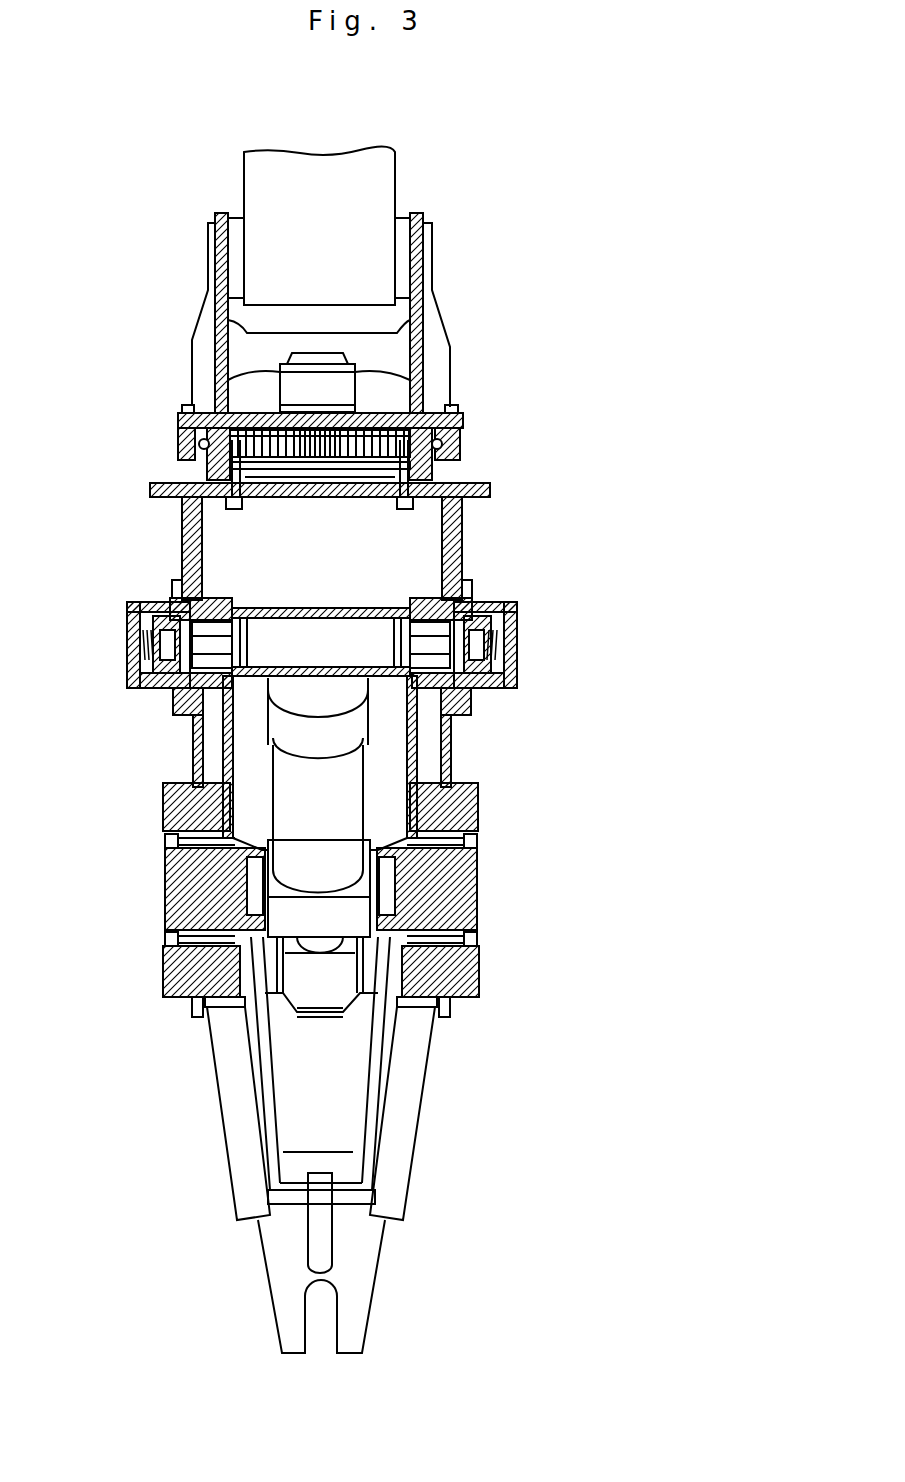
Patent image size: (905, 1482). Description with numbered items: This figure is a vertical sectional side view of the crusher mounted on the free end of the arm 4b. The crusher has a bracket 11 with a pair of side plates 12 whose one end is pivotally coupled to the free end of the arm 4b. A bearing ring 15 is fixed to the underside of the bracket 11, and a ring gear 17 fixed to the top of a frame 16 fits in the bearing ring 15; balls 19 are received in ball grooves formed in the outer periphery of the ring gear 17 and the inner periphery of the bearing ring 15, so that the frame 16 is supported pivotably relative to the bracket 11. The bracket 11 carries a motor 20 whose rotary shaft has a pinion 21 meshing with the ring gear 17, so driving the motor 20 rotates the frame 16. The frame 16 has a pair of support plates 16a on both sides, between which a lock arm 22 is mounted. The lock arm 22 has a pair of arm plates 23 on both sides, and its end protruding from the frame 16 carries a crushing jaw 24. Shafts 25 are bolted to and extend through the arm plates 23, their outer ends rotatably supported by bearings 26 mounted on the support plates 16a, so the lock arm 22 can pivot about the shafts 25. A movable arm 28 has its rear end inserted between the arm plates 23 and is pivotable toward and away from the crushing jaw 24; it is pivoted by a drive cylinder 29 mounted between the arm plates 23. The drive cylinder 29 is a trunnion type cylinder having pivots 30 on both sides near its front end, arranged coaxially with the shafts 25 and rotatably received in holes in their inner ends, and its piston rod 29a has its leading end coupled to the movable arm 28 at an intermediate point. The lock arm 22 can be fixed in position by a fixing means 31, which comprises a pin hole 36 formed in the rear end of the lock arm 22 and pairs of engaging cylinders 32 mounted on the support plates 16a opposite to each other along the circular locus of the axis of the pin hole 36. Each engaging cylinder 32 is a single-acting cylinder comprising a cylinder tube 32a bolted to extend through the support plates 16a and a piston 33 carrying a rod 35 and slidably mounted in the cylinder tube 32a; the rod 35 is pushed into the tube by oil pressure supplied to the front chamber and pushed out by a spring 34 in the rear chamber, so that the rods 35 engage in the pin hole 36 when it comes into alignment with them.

The arm 4b is at (385, 172).
The bracket 11 is at (176, 422).
The side plates 12 is at (420, 278).
The bearing ring 15 is at (455, 428).
The frame 16 is at (150, 490).
The support plates 16a is at (200, 748).
The ring gear 17 is at (435, 471).
The balls 19 is at (458, 446).
The motor 20 is at (345, 388).
The pinion 21 is at (357, 422).
The lock arm 22 is at (223, 726).
The arm plates 23 is at (216, 800).
The crushing jaw 24 is at (360, 1277).
The shafts 25 is at (180, 905).
The bearings 26 is at (170, 986).
The movable arm 28 is at (356, 1103).
The drive cylinder 29 is at (335, 815).
The piston rod 29a is at (318, 946).
The pivots 30 is at (250, 886).
The fixing means 31 is at (510, 592).
The engaging cylinders 32 is at (128, 649).
The cylinder tube 32a is at (127, 673).
The piston 33 is at (185, 598).
The spring 34 is at (130, 620).
The rods 35 is at (238, 630).
The pin hole 36 is at (262, 636).